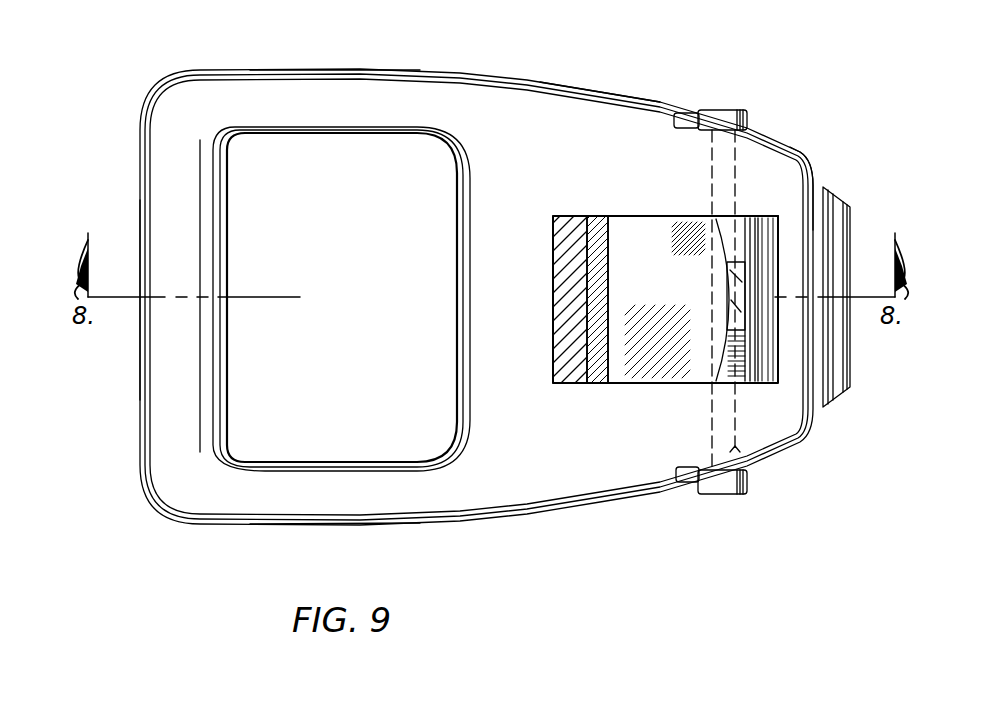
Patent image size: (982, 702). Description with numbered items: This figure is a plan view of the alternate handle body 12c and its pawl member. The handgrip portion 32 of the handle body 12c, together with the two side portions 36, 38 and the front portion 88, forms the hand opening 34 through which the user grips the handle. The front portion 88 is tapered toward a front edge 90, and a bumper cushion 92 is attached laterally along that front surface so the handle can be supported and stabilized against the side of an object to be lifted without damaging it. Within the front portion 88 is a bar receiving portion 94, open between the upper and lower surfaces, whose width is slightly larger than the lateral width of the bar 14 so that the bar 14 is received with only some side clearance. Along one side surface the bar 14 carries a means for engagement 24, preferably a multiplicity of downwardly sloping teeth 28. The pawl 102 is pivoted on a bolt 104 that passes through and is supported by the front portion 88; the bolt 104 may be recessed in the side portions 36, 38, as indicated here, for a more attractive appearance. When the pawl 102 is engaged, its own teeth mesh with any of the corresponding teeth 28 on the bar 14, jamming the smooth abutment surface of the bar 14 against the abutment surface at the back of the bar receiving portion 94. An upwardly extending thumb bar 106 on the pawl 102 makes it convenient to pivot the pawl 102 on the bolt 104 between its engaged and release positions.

The handle body 12c is at (250, 527).
The handgrip portion 32 is at (158, 183).
The hand opening 34 is at (215, 297).
The side portion 36 is at (393, 516).
The side portion 38 is at (335, 84).
The front portion 88 is at (600, 104).
The front edge 90 is at (822, 172).
The bumper cushion 92 is at (851, 232).
The bar receiving portion 94 is at (666, 215).
The pawl 102 is at (665, 299).
The bar 14 is at (567, 364).
The means for engagement 24 is at (602, 366).
The teeth 28 is at (602, 366).
The bolt 104 is at (765, 468).
The thumb bar 106 is at (742, 317).